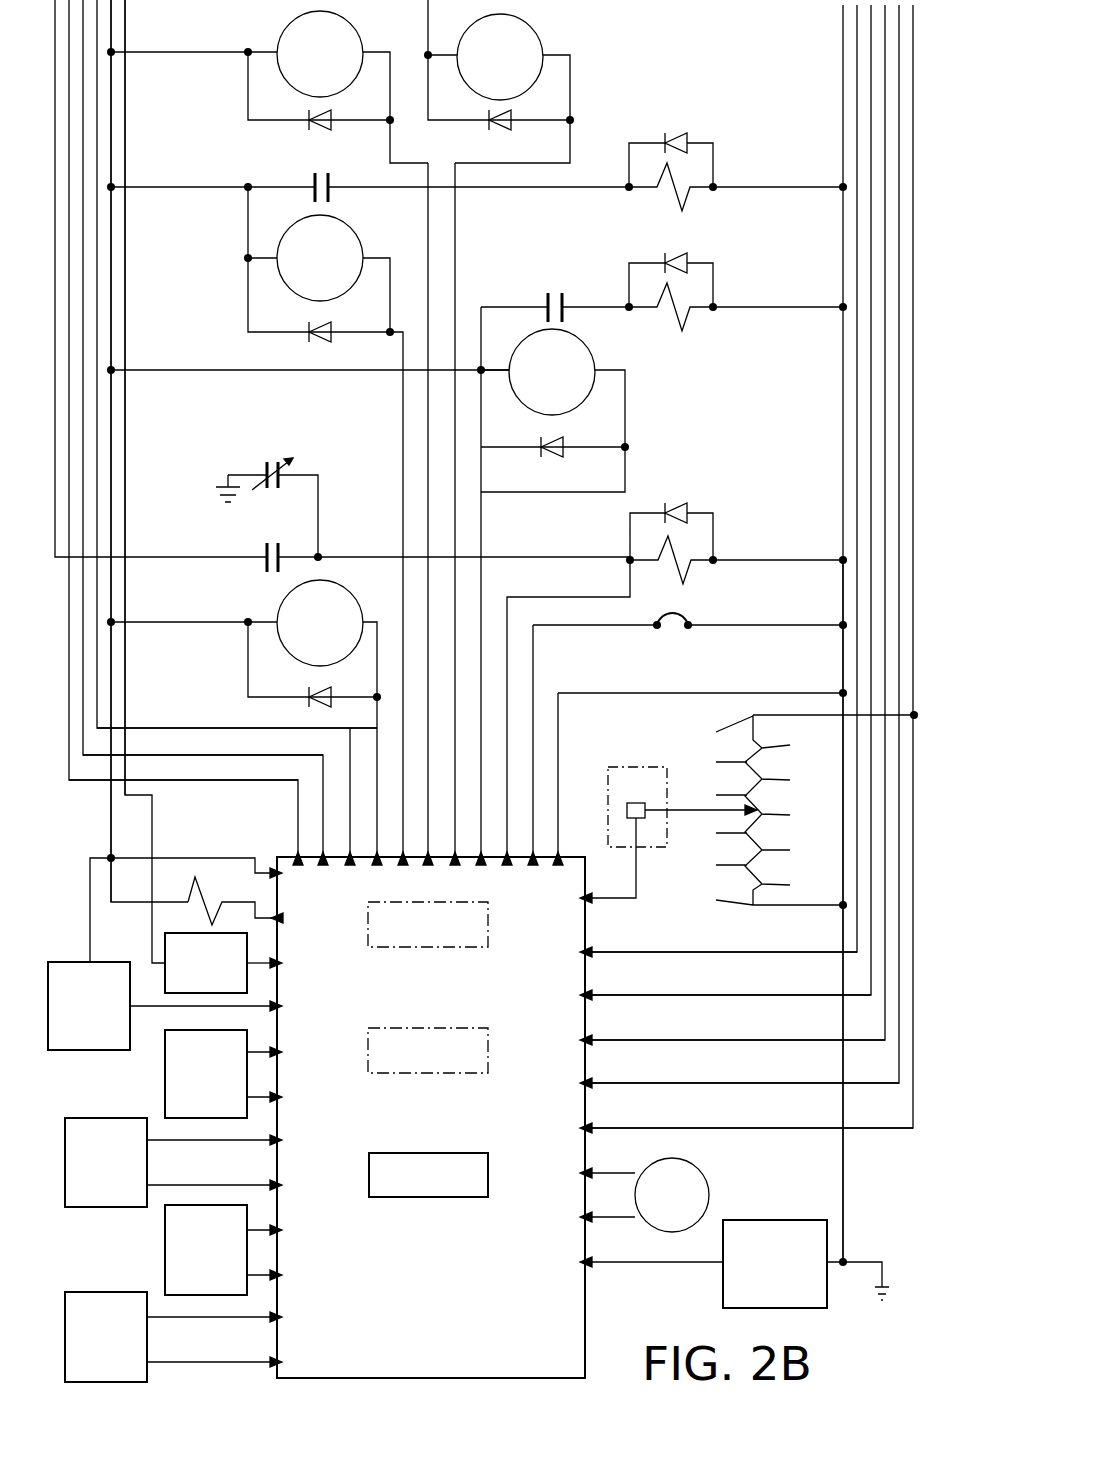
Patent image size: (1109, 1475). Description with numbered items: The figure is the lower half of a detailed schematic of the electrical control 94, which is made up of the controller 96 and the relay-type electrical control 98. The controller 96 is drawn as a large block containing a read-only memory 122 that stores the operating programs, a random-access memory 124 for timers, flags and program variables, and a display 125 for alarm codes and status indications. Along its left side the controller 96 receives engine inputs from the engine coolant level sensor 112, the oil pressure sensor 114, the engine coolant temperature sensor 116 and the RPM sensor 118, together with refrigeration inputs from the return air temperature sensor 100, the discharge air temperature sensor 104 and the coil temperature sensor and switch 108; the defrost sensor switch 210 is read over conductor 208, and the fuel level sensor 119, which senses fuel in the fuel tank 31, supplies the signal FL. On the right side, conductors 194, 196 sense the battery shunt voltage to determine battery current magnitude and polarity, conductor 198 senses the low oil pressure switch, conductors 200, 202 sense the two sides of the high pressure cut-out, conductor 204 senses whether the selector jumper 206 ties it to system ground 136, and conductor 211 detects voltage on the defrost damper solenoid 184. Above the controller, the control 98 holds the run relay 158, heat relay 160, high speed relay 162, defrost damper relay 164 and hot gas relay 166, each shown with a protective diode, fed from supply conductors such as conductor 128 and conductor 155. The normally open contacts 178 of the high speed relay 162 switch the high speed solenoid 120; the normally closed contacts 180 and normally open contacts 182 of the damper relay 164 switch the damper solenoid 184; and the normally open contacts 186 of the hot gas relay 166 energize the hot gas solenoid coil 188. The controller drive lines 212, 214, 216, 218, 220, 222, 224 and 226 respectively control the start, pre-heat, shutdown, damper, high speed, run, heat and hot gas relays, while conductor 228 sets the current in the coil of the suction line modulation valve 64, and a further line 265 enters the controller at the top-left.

The fuel tank 31 is at (650, 767).
The suction line modulation valve 64 is at (195, 877).
The electrical control 94 is at (171, 1183).
The controller 96 is at (586, 1292).
The electrical control 98 is at (713, 96).
The return air temperature sensor 100 is at (165, 1065).
The discharge air temperature sensor 104 is at (100, 1208).
The coil temperature sensor and switch 108 is at (165, 1245).
The engine coolant level sensor 112 is at (102, 1062).
The oil pressure sensor 114 is at (723, 1287).
The engine coolant temperature sensor 116 is at (103, 1292).
The engine speed or RPM sensor 118 is at (708, 1193).
The fuel level sensor 119 is at (759, 937).
The high speed solenoid 120 is at (668, 211).
The read-only memory (ROM) 122 is at (488, 937).
The random-access memory (RAM) 124 is at (488, 1062).
The display 125 is at (490, 1182).
The conductor 128 is at (126, 279).
The system ground 136 is at (847, 1198).
The power line 155 is at (112, 226).
The run relay 158 is at (407, 44).
The heat relay 160 is at (592, 44).
The high speed relay 162 is at (407, 234).
The defrost damper relay 164 is at (394, 592).
The hot gas relay 166 is at (640, 354).
The normally open contacts 178 is at (316, 172).
The normally closed contacts 180 is at (275, 460).
The normally open contacts 182 is at (273, 548).
The defrost damper solenoid 184 is at (673, 553).
The normally open contacts 186 is at (553, 293).
The hot gas solenoid coil 188 is at (672, 300).
The conductor 194 is at (857, 1130).
The conductor 196 is at (832, 1088).
The conductor 198 is at (832, 1043).
The conductor 200 is at (832, 1000).
The conductor 202 is at (832, 956).
The conductor 204 is at (620, 628).
The suction line modulation valve selector jumper 206 is at (678, 614).
The conductor 208 is at (263, 957).
The defrost sensor switch 210 is at (165, 977).
The conductor 211 is at (518, 595).
The conductor 212 is at (104, 800).
The conductor 214 is at (101, 760).
The conductor 216 is at (147, 727).
The conductor 218 is at (377, 722).
The conductor 220 is at (403, 392).
The conductor 222 is at (390, 142).
The conductor 224 is at (570, 145).
The conductor 226 is at (500, 493).
The conductor 228 is at (263, 913).
The output line 265 is at (270, 867).